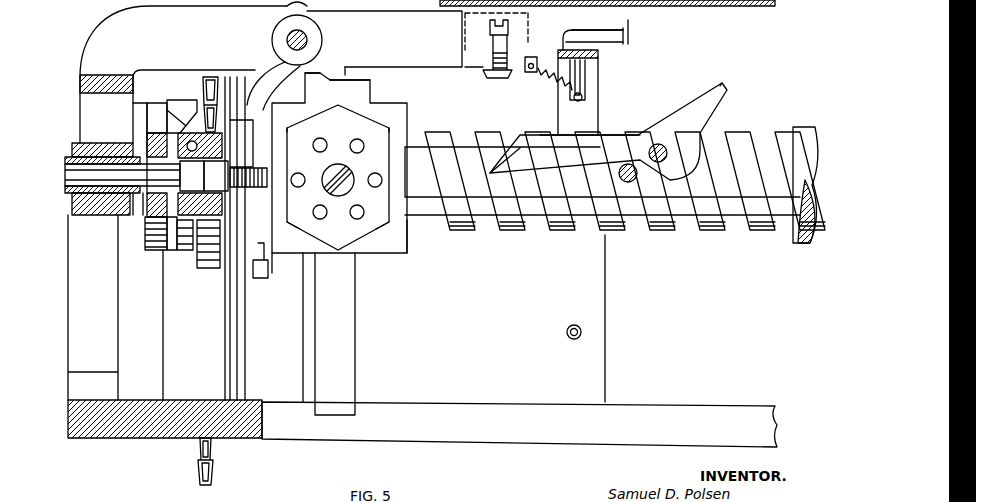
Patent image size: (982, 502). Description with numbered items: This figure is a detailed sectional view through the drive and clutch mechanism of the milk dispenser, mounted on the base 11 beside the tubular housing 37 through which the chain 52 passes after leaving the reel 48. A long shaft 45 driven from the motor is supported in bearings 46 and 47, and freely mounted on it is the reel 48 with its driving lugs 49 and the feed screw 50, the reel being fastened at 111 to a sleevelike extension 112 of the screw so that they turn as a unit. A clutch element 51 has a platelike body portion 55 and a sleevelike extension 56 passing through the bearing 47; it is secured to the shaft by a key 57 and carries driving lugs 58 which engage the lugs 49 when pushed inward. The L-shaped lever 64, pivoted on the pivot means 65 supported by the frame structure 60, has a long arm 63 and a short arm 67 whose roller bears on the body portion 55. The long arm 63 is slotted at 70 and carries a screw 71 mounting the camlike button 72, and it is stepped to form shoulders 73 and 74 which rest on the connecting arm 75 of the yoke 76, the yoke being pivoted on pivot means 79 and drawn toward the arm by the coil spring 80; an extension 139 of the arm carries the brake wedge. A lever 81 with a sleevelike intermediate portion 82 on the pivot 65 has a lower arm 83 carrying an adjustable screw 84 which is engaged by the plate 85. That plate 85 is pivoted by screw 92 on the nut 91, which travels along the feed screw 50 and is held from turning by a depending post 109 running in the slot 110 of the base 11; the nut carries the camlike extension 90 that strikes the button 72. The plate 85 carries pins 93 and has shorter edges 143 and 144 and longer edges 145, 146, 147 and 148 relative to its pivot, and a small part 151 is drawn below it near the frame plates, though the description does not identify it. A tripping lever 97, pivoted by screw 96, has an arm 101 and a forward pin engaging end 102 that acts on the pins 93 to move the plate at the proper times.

The base 11 is at (102, 430).
The tubular housing 37 is at (178, 358).
The shaft 45 is at (84, 170).
The bearing 46 is at (91, 175).
The bearing 47 is at (80, 145).
The reel 48 is at (200, 278).
The driving lugs 49 is at (183, 118).
The feed screw 50 is at (440, 137).
The clutch element 51 is at (141, 246).
The chain 52 is at (212, 85).
The body portion 55 is at (153, 110).
The sleevelike extension 56 is at (72, 196).
The key 57 is at (139, 145).
The driving lugs 58 is at (171, 100).
The frame structure 60 is at (618, 296).
The long arm 63 is at (387, 47).
The L-shaped lever 64 is at (94, 28).
The pivot means 65 is at (306, 36).
The arm 67 is at (88, 104).
The slot 70 is at (478, 62).
The screw 71 is at (512, 34).
The camlike button 72 is at (527, 73).
The shoulder 73 is at (570, 32).
The shoulder 74 is at (600, 46).
The connecting arm 75 is at (600, 55).
The yoke 76 is at (612, 116).
The pivot means 79 is at (582, 331).
The coil spring 80 is at (553, 87).
The lever 81 is at (270, 54).
The sleevelike intermediate portion 82 is at (322, 44).
The lower arm 83 is at (241, 238).
The adjustable screw 84 is at (270, 178).
The plate 85 is at (355, 125).
The camlike extension 90 is at (325, 75).
The nut 91 is at (353, 98).
The screw 92 is at (348, 170).
The pins 93 is at (355, 145).
The screw 96 is at (668, 150).
The tripping lever 97 is at (711, 80).
The arm 101 is at (705, 105).
The pin engaging end 102 is at (515, 148).
The depending post 109 is at (340, 298).
The slot 110 is at (456, 428).
The fastening 111 is at (195, 176).
The sleevelike extension 112 is at (219, 176).
The extension 139 is at (630, 28).
The edge 143 is at (274, 268).
The edge 144 is at (405, 230).
The edge 145 is at (320, 120).
The edge 146 is at (378, 136).
The edge 147 is at (360, 238).
The edge 148 is at (310, 238).
The stop 151 is at (261, 280).